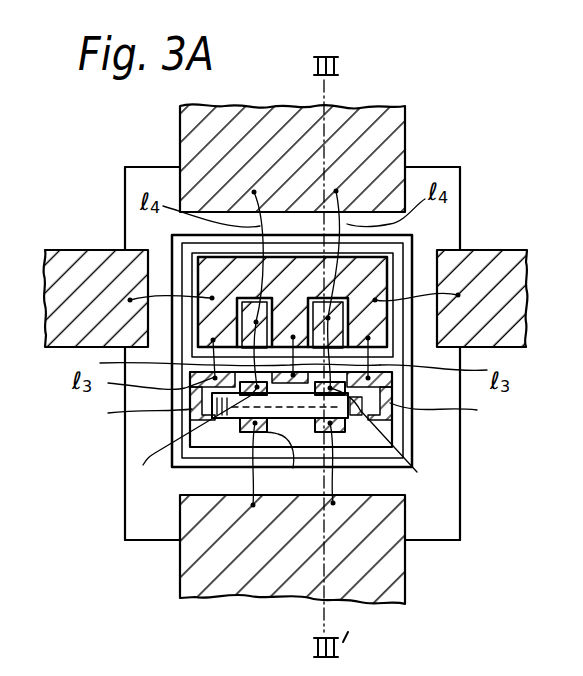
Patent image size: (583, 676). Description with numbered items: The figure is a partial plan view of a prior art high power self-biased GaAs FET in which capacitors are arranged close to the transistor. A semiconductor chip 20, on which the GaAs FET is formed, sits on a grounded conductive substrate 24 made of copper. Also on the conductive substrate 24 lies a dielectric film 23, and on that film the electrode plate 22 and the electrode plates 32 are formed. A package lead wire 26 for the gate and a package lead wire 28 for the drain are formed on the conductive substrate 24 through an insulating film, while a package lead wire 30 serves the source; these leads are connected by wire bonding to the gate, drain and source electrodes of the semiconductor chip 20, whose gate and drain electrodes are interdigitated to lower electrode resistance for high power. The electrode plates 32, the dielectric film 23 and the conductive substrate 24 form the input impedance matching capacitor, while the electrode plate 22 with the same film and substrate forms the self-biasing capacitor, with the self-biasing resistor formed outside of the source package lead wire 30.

The semiconductor chip 20 is at (390, 432).
The electrode plate 22 is at (397, 242).
The dielectric film 23 is at (393, 262).
The conductive substrate 24 is at (462, 517).
The package lead wire for the gate 26 is at (406, 134).
The package lead wire for the drain 28 is at (406, 590).
The package lead wire for the source 30 is at (73, 252).
The electrode plates 32 is at (322, 318).